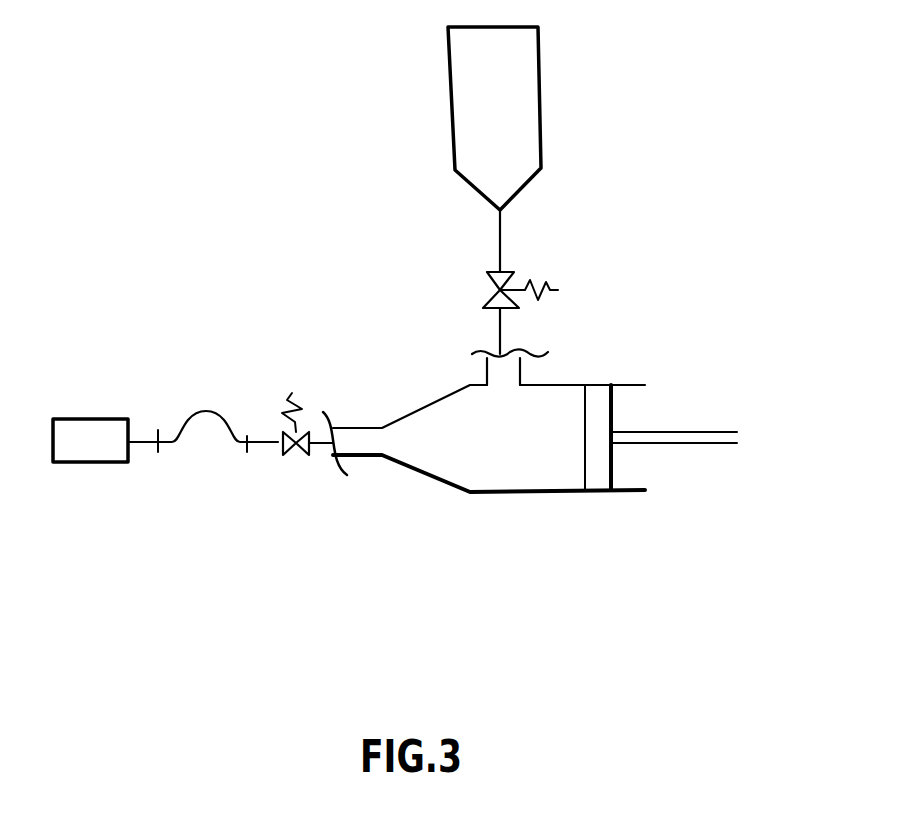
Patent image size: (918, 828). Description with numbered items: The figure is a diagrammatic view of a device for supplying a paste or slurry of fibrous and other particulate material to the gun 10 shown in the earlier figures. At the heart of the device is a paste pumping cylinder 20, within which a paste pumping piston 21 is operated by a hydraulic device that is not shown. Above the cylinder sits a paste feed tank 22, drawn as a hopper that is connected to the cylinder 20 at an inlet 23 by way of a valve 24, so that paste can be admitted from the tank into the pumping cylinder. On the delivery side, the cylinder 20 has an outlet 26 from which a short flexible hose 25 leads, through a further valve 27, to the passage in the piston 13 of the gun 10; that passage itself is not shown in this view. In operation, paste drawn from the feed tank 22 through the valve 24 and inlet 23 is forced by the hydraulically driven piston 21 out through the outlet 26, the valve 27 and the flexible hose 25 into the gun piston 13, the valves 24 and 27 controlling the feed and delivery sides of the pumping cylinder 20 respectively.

The gun 10 is at (82, 433).
The piston 13 is at (141, 442).
The short flexible hose 25 is at (201, 400).
The valve 27 is at (296, 455).
The outlet 26 is at (358, 440).
The paste pumping cylinder 20 is at (495, 460).
The paste pumping piston 21 is at (600, 460).
The paste feed tank 22 is at (488, 92).
The inlet 23 is at (507, 370).
The valve 24 is at (508, 282).